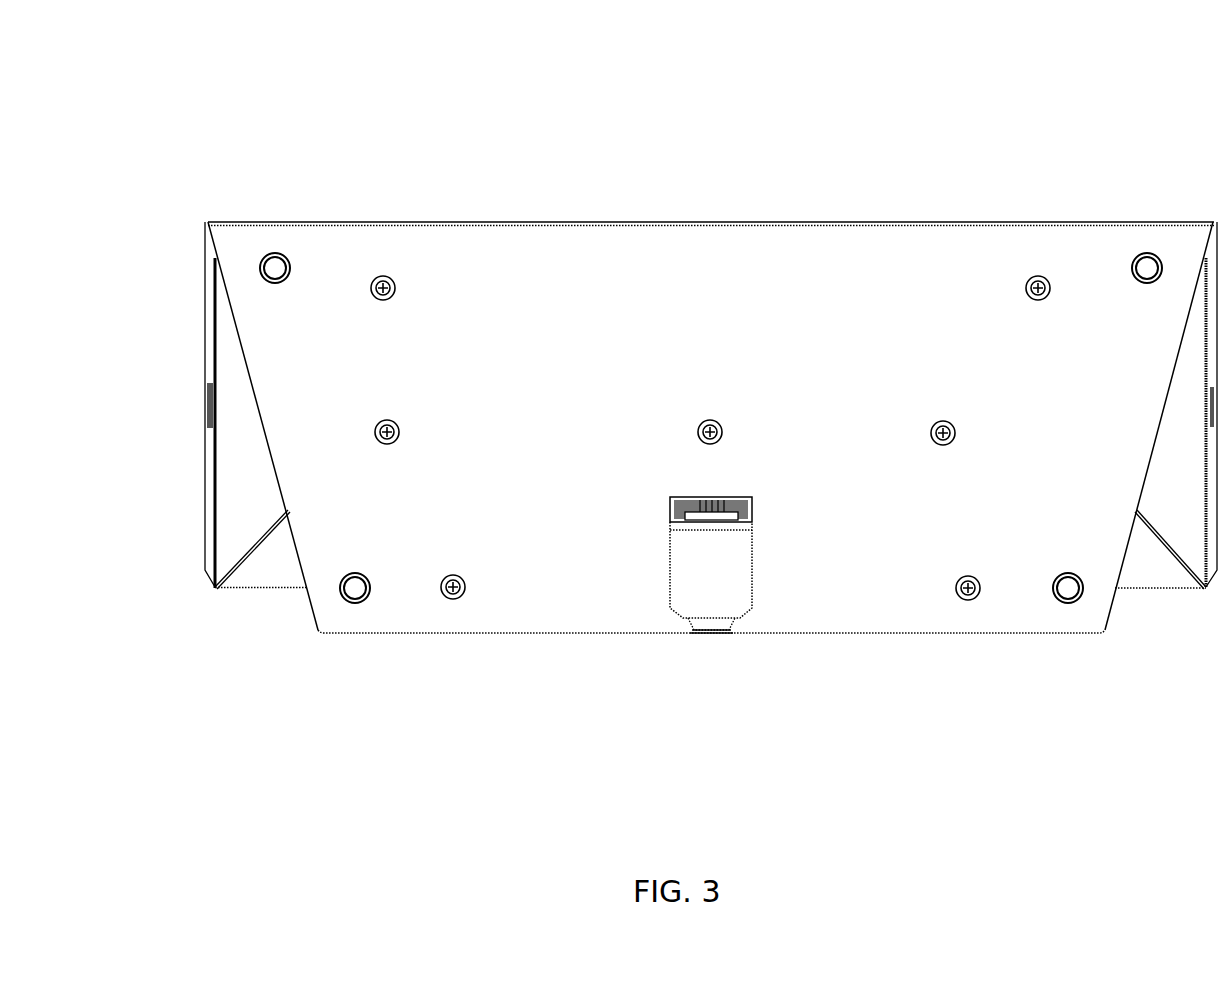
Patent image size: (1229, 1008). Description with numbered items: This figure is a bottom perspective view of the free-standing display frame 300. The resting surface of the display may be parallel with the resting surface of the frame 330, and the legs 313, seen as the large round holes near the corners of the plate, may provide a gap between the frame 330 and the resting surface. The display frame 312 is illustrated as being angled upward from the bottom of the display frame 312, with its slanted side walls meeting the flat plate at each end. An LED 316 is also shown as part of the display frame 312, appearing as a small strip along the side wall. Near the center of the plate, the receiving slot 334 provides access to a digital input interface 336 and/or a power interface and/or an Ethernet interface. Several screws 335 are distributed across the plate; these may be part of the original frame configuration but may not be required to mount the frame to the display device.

The free-standing display frame 300 is at (157, 57).
The frame 330 is at (240, 245).
The display frame 312 is at (215, 342).
The LED 316 is at (212, 410).
The legs 313 is at (345, 590).
The screws 335 is at (700, 437).
The receiving slot 334 is at (690, 562).
The digital input interface 336 is at (680, 513).